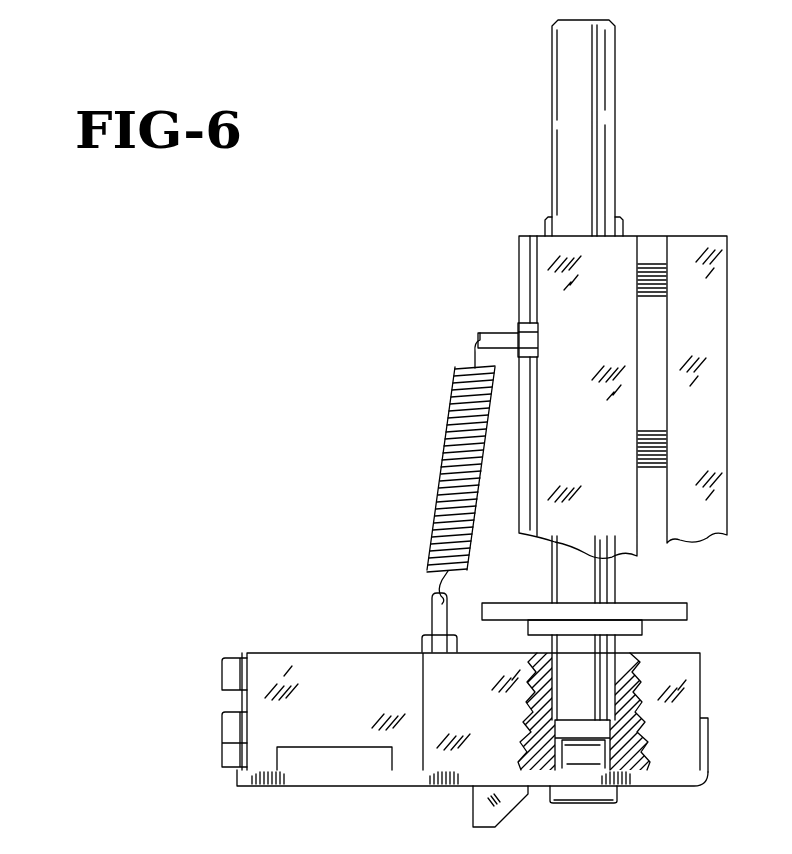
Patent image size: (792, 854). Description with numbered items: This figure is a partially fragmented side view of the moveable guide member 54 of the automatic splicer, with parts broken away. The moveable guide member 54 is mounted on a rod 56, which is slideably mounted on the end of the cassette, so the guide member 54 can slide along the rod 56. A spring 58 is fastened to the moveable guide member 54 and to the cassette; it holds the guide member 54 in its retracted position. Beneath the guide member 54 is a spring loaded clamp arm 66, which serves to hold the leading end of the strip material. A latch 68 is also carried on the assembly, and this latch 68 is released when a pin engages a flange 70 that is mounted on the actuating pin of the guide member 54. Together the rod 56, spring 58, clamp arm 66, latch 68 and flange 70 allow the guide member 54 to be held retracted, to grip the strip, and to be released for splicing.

The moveable guide member 54 is at (682, 688).
The rod 56 is at (592, 108).
The spring 58 is at (450, 447).
The spring loaded clamp arm 66 is at (404, 778).
The latch 68 is at (497, 812).
The flange 70 is at (674, 611).